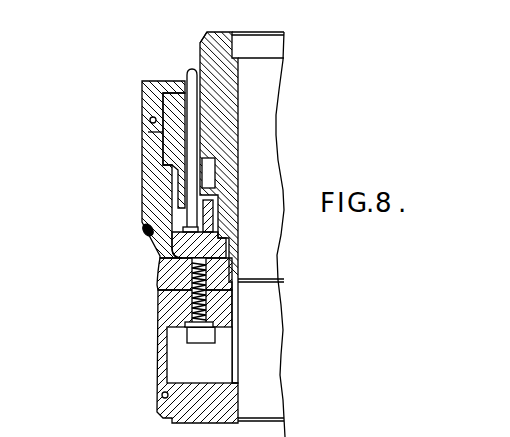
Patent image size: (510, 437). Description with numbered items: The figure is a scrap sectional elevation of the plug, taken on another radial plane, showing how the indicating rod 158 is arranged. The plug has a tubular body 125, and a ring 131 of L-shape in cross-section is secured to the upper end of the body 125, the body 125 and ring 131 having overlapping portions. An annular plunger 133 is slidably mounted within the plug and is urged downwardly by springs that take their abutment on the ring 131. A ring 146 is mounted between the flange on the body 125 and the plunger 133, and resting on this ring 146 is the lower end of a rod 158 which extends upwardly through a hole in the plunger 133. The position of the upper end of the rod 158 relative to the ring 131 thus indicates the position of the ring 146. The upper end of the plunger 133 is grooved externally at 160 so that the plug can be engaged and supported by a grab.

The external groove 160 is at (200, 44).
The ring 131 is at (152, 90).
The annular plunger 133 is at (210, 116).
The rod 158 is at (193, 180).
The ring 146 is at (177, 238).
The tubular body 125 is at (157, 282).